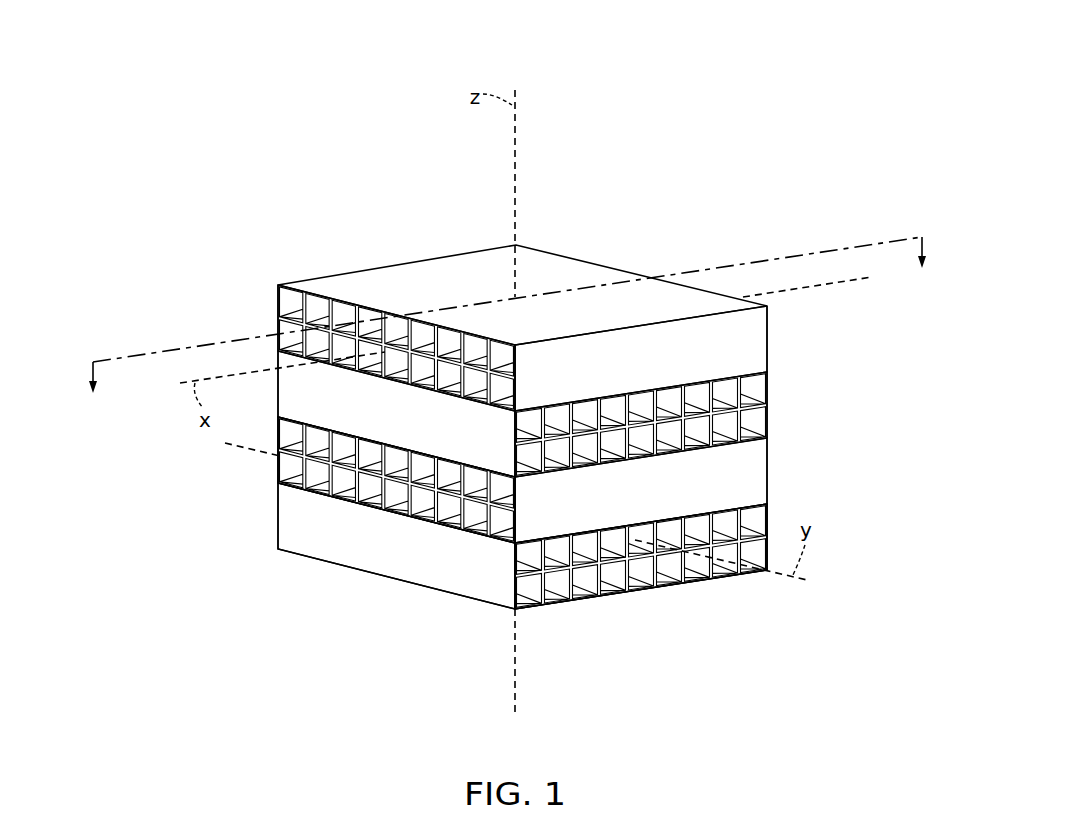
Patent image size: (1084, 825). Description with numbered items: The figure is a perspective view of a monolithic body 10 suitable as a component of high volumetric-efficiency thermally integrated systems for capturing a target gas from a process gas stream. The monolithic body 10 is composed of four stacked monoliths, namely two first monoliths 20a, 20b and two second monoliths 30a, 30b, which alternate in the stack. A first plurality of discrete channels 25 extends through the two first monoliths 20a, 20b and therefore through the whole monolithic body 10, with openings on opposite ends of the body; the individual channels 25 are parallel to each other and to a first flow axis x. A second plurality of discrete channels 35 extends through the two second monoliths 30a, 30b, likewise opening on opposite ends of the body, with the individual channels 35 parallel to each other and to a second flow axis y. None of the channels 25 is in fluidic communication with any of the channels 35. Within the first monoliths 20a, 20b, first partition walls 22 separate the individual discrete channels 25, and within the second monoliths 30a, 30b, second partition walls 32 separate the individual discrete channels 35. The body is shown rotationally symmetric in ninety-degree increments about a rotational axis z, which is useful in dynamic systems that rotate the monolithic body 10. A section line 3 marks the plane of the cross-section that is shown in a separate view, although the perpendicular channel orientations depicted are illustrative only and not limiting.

The monolithic body 10 is at (254, 66).
The first monolith 20a is at (763, 339).
The first monolith 20b is at (760, 471).
The second monolith 30a is at (297, 388).
The second monolith 30b is at (295, 508).
The first plurality of discrete channels 25 is at (398, 372).
The first partition walls 22 is at (458, 515).
The second plurality of discrete channels 35 is at (698, 428).
The second partition walls 32 is at (632, 588).
The section line 3- 3 is at (507, 331).